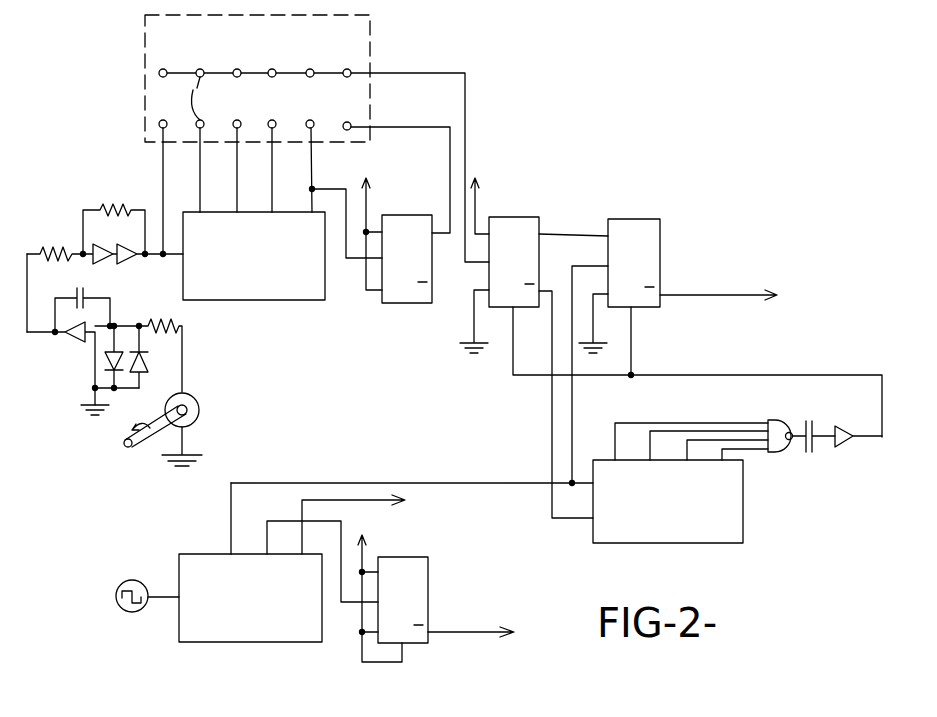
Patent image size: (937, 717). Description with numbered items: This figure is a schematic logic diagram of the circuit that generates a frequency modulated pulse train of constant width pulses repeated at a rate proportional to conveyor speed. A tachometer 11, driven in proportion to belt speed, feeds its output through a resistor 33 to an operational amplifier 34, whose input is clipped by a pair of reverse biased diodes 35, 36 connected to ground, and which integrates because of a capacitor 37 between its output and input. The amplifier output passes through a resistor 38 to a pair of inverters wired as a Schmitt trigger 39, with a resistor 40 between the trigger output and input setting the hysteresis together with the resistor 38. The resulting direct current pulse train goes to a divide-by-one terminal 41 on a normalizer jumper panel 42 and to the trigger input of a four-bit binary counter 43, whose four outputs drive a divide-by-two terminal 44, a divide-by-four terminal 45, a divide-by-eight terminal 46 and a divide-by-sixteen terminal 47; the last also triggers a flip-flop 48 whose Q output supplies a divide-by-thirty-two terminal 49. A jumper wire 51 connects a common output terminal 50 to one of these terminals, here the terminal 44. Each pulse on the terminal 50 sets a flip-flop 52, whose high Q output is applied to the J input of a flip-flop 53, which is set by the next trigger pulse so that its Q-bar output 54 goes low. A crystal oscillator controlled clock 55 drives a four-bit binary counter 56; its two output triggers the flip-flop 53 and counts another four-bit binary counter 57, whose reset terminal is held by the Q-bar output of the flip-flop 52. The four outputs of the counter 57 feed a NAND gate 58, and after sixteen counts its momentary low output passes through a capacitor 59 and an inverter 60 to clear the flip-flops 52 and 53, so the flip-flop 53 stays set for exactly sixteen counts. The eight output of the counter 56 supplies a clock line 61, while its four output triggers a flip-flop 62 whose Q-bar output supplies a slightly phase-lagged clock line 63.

The tachometer 11 is at (202, 404).
The resistor 33 is at (160, 322).
The operational amplifier 34 is at (72, 340).
The reverse biased diode 35 is at (100, 360).
The reverse biased diode 36 is at (147, 360).
The capacitor 37 is at (77, 293).
The resistor 38 is at (62, 246).
The Schmitt trigger 39 is at (114, 274).
The resistor 40 is at (122, 200).
The divide-by-one terminal 41 is at (159, 124).
The normalizer jumper panel 42 is at (373, 33).
The four-bit binary counter 43 is at (243, 302).
The divide-by-two terminal 44 is at (203, 121).
The divide-by-four terminal 45 is at (240, 121).
The divide-by-eight terminal 46 is at (276, 121).
The divide-by-16 terminal 47 is at (314, 130).
The flip-flop 48 is at (393, 213).
The divide-by-32 terminal 49 is at (350, 122).
The common output terminal 50 is at (395, 73).
The jumper wire 51 is at (190, 88).
The flip-flop 52 is at (523, 214).
The flip-flop 53 is at (637, 218).
The Q-bar output 54 is at (695, 296).
The crystal oscillator controlled clock 55 is at (140, 580).
The four-bit binary counter 56 is at (232, 645).
The four-bit binary counter 57 is at (710, 545).
The NAND gate 58 is at (770, 455).
The capacitor 59 is at (814, 455).
The inverter 60 is at (845, 447).
The clock line 61 is at (352, 498).
The flip-flop 62 is at (430, 580).
The clock line 63 is at (445, 632).